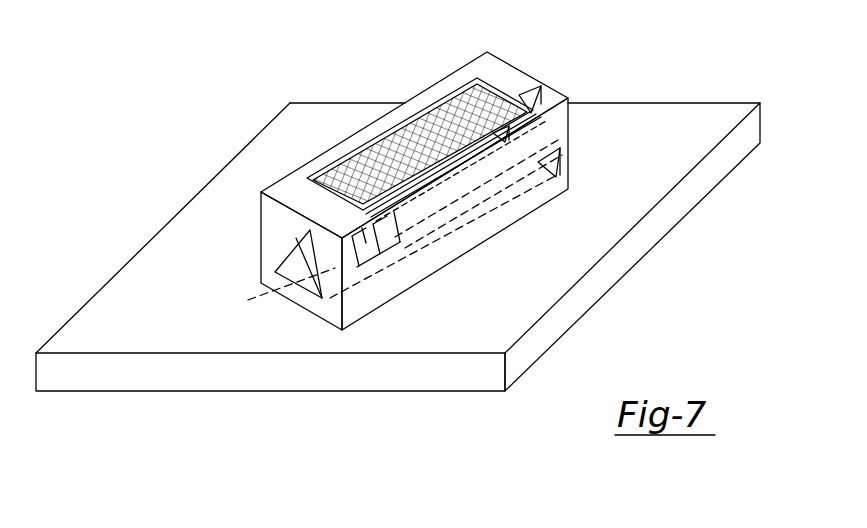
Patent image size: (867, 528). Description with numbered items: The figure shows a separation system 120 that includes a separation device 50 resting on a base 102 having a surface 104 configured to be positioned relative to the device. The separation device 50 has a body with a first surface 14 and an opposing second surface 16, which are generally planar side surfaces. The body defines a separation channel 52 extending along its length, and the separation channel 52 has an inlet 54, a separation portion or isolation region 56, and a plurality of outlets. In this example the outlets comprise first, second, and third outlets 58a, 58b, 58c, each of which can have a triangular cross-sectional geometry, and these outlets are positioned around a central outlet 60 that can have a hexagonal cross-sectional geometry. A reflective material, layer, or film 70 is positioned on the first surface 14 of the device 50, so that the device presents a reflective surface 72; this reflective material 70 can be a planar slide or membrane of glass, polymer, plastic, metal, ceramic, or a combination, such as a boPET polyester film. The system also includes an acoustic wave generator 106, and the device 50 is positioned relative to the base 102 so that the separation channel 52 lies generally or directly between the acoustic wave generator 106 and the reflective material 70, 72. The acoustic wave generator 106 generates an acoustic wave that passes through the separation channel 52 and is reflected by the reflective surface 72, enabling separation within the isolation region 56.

The separation system 120 is at (214, 82).
The first surface 14 is at (287, 176).
The reflective surface 72 is at (311, 194).
The reflective material, layer, or film 70 is at (339, 179).
The first outlet 58a is at (536, 84).
The second outlet 58b is at (571, 110).
The third outlet 58c is at (568, 160).
The central outlet 60 is at (562, 126).
The surface of the base 104 is at (700, 102).
The base 102 is at (590, 256).
The separation device 50 is at (256, 238).
The second surface 16 is at (260, 289).
The inlet 54 is at (292, 284).
The acoustic wave generator 106 is at (375, 268).
The separation portion or isolation region 56 is at (411, 250).
The separation channel 52 is at (433, 245).